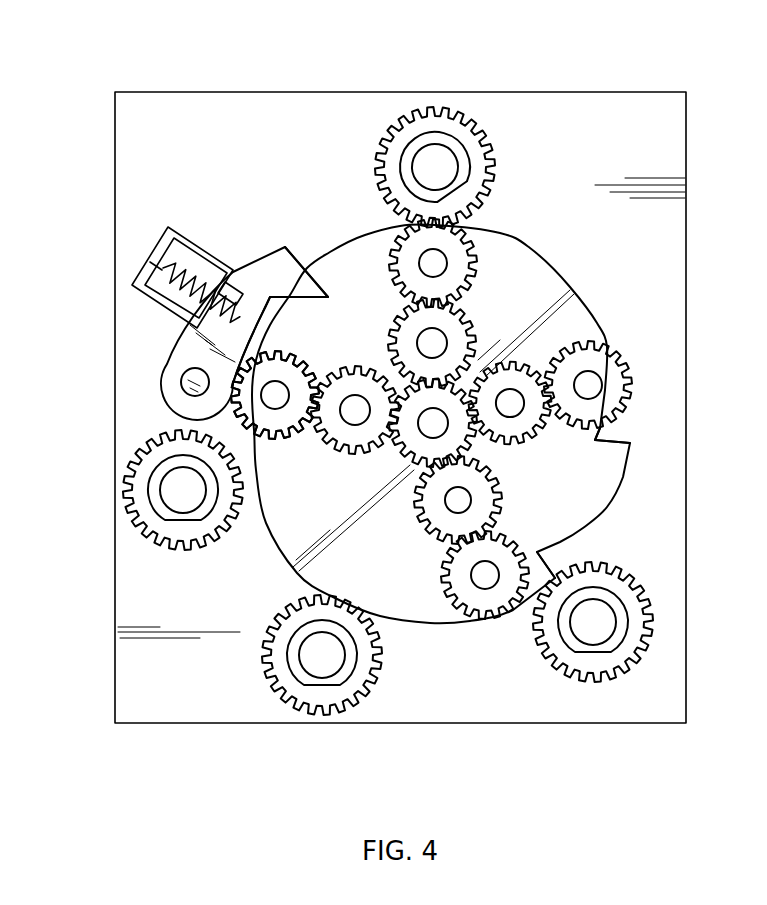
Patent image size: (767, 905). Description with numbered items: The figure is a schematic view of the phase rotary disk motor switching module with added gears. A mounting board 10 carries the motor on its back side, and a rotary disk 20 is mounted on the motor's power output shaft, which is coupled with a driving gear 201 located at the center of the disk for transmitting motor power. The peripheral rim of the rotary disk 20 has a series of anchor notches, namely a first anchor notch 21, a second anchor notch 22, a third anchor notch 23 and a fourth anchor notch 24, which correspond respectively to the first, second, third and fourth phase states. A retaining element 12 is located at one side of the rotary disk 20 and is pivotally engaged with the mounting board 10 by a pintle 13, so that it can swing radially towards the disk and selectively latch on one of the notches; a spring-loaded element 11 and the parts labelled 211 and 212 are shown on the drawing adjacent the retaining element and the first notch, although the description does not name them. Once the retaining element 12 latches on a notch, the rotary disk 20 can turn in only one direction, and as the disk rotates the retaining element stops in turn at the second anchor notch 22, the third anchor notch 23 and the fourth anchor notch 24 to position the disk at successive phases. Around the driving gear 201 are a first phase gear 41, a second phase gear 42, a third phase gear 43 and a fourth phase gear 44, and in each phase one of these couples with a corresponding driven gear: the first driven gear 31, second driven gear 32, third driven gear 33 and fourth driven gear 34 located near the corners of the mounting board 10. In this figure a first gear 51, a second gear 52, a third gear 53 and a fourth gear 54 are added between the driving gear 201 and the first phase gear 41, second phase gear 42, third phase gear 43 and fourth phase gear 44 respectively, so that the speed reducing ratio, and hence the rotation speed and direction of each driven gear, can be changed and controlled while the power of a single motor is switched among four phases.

The mounting board 10 is at (142, 105).
The spring 11 is at (163, 263).
The retaining element 12 is at (193, 341).
The pintle 13 is at (183, 380).
The rotary disk 20 is at (565, 505).
The driving gear 201 is at (470, 443).
The first anchor notch 21 is at (348, 188).
The hook end of lever 211 is at (314, 296).
The lever body portion 212 is at (283, 310).
The second anchor notch 22 is at (240, 428).
The third anchor notch 23 is at (550, 554).
The fourth anchor notch 24 is at (605, 433).
The first driven gear 31 is at (410, 133).
The second driven gear 32 is at (305, 697).
The third driven gear 33 is at (145, 518).
The fourth driven gear 34 is at (598, 663).
The first phase gear 41 is at (452, 252).
The second phase gear 42 is at (477, 607).
The third phase gear 43 is at (613, 374).
The fourth phase gear 44 is at (280, 418).
The first gear 51 is at (477, 323).
The second gear 52 is at (440, 520).
The third gear 53 is at (528, 382).
The fourth gear 54 is at (335, 430).